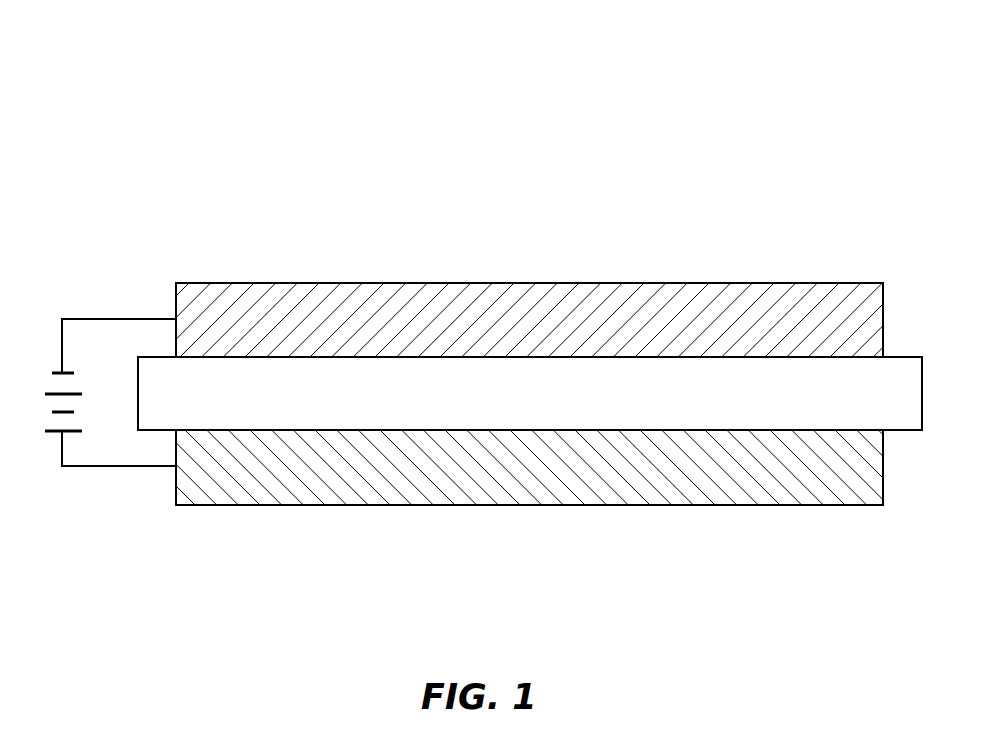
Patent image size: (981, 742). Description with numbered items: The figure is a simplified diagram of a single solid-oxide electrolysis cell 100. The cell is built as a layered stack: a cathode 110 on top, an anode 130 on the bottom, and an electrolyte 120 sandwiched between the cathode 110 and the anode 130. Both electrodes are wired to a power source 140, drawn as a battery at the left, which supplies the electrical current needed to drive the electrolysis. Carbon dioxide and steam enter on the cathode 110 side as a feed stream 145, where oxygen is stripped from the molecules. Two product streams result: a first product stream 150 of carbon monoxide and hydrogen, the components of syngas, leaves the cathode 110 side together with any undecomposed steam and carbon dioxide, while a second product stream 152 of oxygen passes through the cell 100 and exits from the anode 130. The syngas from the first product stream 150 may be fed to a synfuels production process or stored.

The solid-oxide electrolysis cell 100 is at (434, 147).
The cathode 110 is at (279, 330).
The electrolyte 120 is at (538, 402).
The anode 130 is at (791, 476).
The power source 140 is at (101, 488).
The feed stream 145 is at (324, 283).
The first product stream 150 is at (511, 283).
The second product stream 152 is at (326, 505).